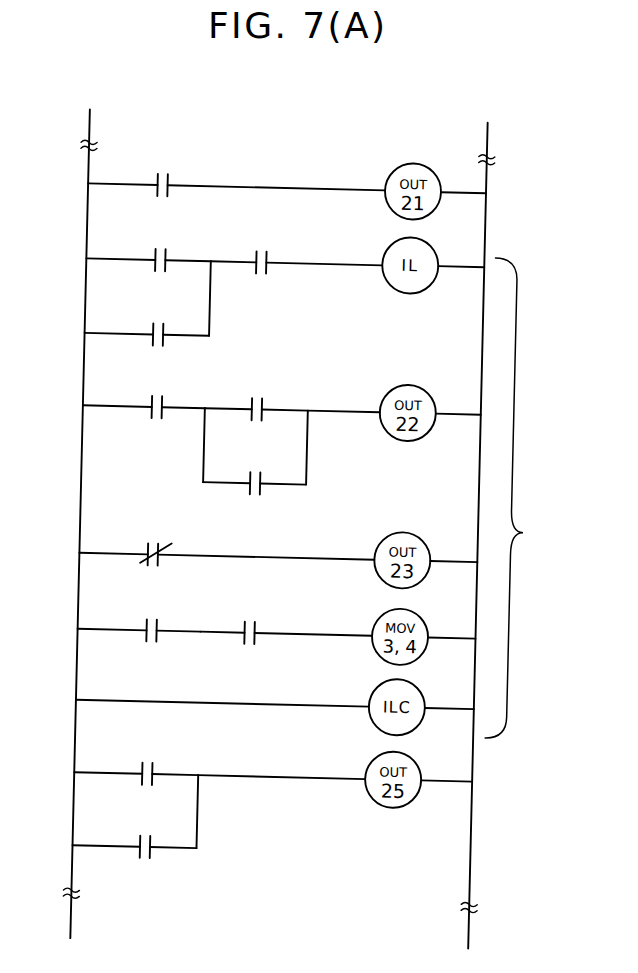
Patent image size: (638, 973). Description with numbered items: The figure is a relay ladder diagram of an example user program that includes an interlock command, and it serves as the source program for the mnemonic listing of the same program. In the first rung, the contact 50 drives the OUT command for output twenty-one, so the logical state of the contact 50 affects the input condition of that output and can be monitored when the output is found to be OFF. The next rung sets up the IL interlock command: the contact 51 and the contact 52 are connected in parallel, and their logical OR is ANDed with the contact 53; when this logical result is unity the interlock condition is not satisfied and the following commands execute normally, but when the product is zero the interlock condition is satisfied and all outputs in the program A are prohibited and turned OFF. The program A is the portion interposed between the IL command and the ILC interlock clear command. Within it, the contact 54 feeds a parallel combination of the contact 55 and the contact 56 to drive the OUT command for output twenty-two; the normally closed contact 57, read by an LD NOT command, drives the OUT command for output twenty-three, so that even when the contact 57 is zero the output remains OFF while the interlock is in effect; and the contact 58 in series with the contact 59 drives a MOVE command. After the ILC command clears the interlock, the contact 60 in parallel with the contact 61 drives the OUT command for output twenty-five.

The contact 50 is at (237, 176).
The contact 51 is at (148, 249).
The contact 52 is at (146, 323).
The contact 53 is at (297, 252).
The contact 54 is at (144, 396).
The contact 55 is at (257, 398).
The contact 56 is at (255, 472).
The contact 57 is at (227, 543).
The contact 58 is at (139, 619).
The contact 59 is at (286, 623).
The contact 60 is at (136, 763).
The contact 61 is at (134, 836).
The program A is at (519, 498).